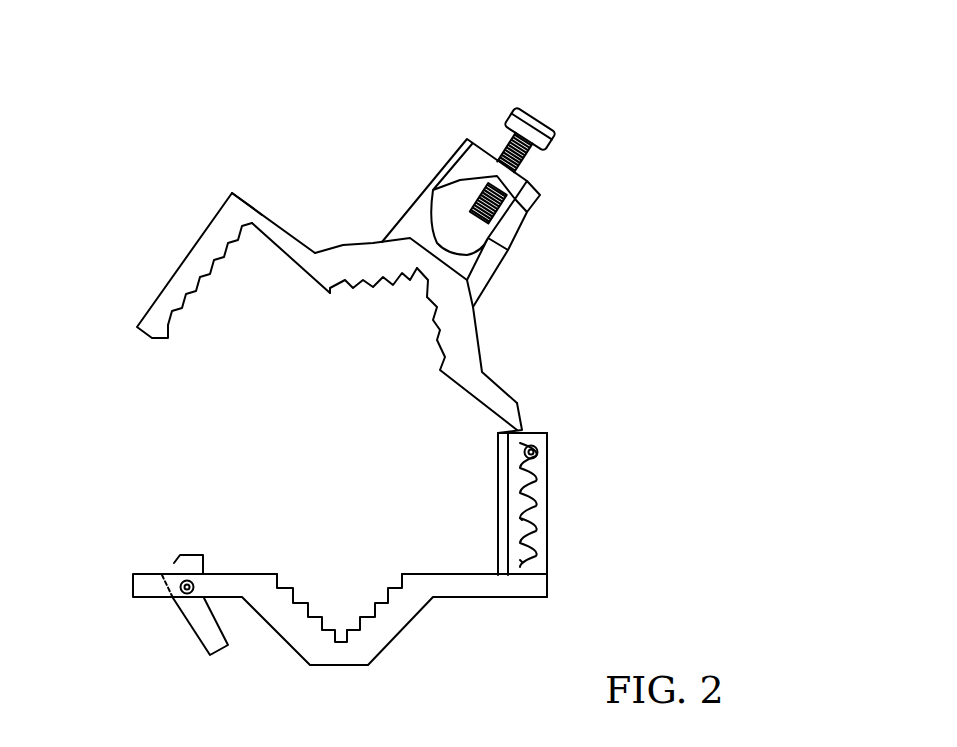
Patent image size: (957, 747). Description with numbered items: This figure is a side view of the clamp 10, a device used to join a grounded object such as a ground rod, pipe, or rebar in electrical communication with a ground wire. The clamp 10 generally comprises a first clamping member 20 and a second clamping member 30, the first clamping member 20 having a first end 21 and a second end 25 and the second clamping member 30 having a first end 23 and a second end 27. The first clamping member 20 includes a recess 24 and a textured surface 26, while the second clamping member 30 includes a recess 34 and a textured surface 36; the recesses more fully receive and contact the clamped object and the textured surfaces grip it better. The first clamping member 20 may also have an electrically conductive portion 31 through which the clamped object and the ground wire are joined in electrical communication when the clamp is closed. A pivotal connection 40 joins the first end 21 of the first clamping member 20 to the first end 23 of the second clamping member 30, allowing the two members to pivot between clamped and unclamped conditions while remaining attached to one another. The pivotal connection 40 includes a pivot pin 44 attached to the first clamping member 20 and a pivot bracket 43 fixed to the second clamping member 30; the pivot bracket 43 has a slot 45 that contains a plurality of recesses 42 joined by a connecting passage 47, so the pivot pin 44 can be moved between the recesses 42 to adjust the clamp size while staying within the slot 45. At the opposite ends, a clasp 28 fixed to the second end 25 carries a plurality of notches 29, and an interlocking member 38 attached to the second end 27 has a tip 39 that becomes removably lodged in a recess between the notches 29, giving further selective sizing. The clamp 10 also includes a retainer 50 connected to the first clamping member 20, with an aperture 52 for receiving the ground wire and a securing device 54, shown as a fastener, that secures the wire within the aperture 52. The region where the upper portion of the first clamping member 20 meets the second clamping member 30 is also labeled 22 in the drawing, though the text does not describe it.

The clamp 10 is at (720, 300).
The first clamping member 20 is at (576, 257).
The first end of first clamping member 21 is at (528, 410).
The upper portion 22 is at (592, 8).
The first end of second clamping member 23 is at (533, 592).
The recess 24 is at (417, 277).
The second end of first clamping member 25 is at (237, 207).
The textured surface 26 is at (340, 283).
The second end of second clamping member 27 is at (147, 588).
The clasp 28 is at (178, 258).
The notches 29 is at (215, 342).
The second clamping member 30 is at (640, 546).
The electrically conductive portion 31 is at (462, 320).
The recess 34 is at (316, 617).
The textured surface 36 is at (392, 588).
The interlocking member 38 is at (187, 633).
The tip 39 is at (170, 570).
The pivotal connection 40 is at (674, 410).
The recesses 42 is at (498, 477).
The pivot bracket 43 is at (547, 509).
The pivot pin 44 is at (533, 445).
The slot 45 is at (530, 558).
The connecting passage 47 is at (517, 523).
The retainer 50 is at (432, 176).
The aperture 52 is at (498, 220).
The securing device 54 is at (504, 115).